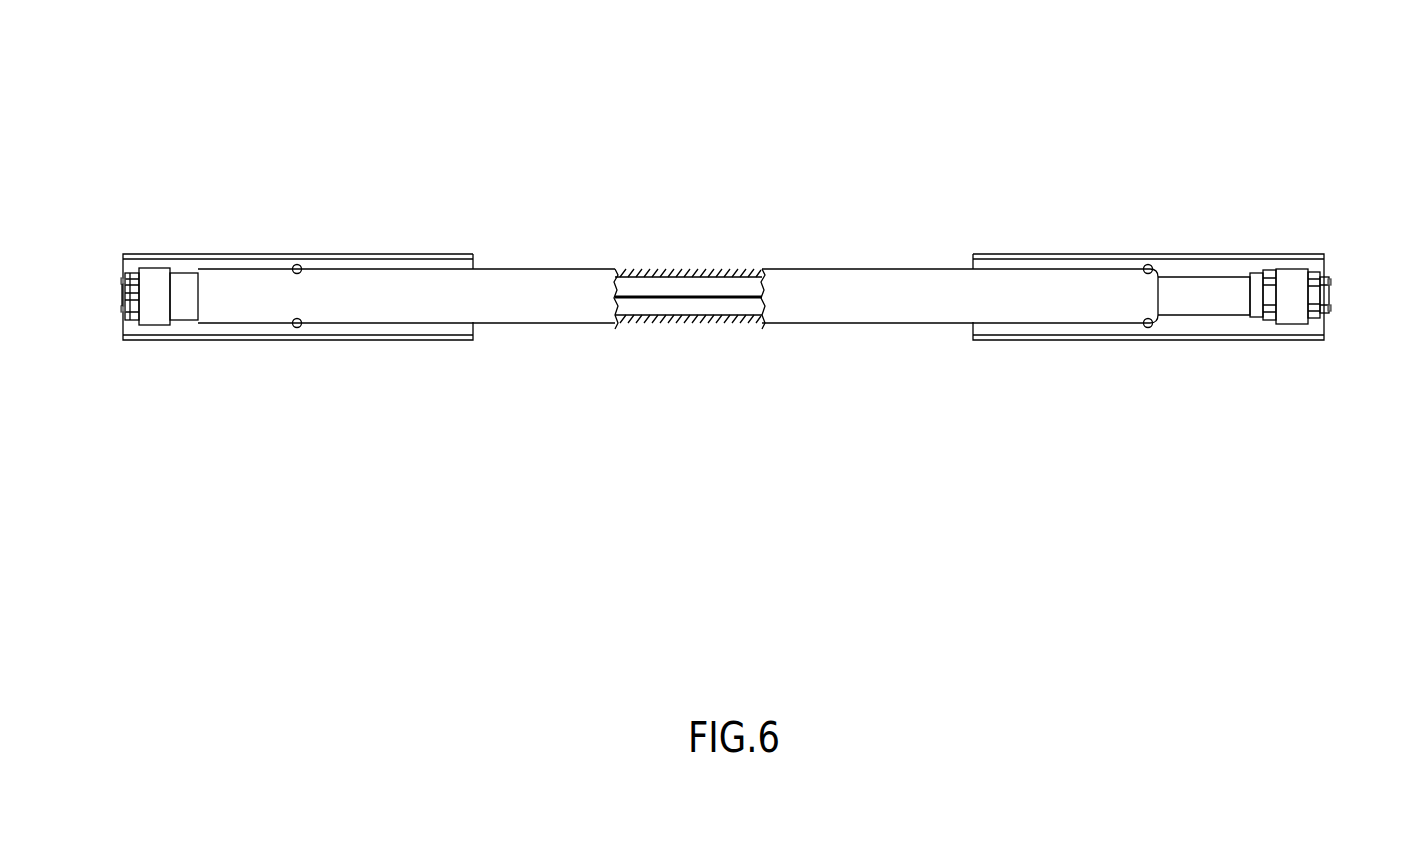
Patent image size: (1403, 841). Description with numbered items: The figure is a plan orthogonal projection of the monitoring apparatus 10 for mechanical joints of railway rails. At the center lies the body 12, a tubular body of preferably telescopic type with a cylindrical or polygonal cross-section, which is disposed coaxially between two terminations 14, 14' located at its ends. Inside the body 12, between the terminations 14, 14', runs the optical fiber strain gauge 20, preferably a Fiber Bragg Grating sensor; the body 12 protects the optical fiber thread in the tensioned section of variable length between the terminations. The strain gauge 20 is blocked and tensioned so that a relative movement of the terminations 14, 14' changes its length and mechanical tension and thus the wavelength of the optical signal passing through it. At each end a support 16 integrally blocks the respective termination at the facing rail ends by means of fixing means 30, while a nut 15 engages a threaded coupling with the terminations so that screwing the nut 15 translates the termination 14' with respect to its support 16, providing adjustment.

The monitoring apparatus 10 is at (1018, 58).
The body 12 is at (642, 323).
The termination 14 is at (189, 261).
The termination 14' is at (1217, 253).
The nut 15 is at (130, 283).
The support 16 is at (152, 272).
The optical fiber strain gauge 20 is at (714, 295).
The fixing means 30 is at (350, 253).